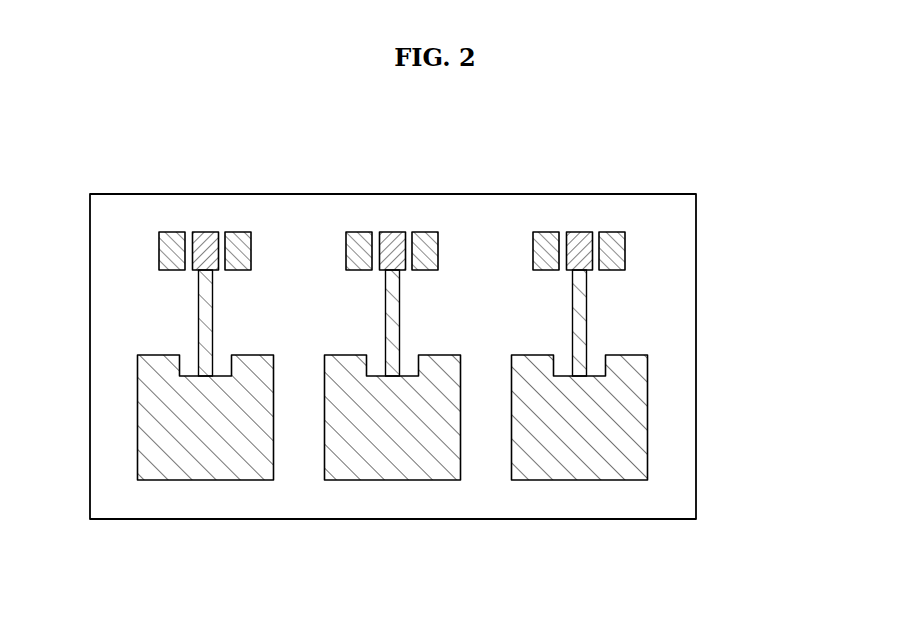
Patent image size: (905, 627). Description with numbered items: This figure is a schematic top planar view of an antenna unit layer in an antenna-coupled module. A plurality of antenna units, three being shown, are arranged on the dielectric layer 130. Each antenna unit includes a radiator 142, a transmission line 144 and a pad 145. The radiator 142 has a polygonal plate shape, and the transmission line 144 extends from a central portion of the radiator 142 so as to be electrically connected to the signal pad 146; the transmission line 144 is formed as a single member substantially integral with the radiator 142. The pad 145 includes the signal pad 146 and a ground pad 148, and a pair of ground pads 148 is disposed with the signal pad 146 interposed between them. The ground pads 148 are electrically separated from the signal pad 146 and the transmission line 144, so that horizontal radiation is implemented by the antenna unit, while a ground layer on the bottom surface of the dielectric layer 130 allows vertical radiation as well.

The dielectric layer 130 is at (687, 420).
The radiator 142 is at (583, 465).
The transmission line 144 is at (580, 310).
The pad 145 is at (579, 181).
The signal pad 146 is at (584, 232).
The ground pad 148 is at (548, 232).